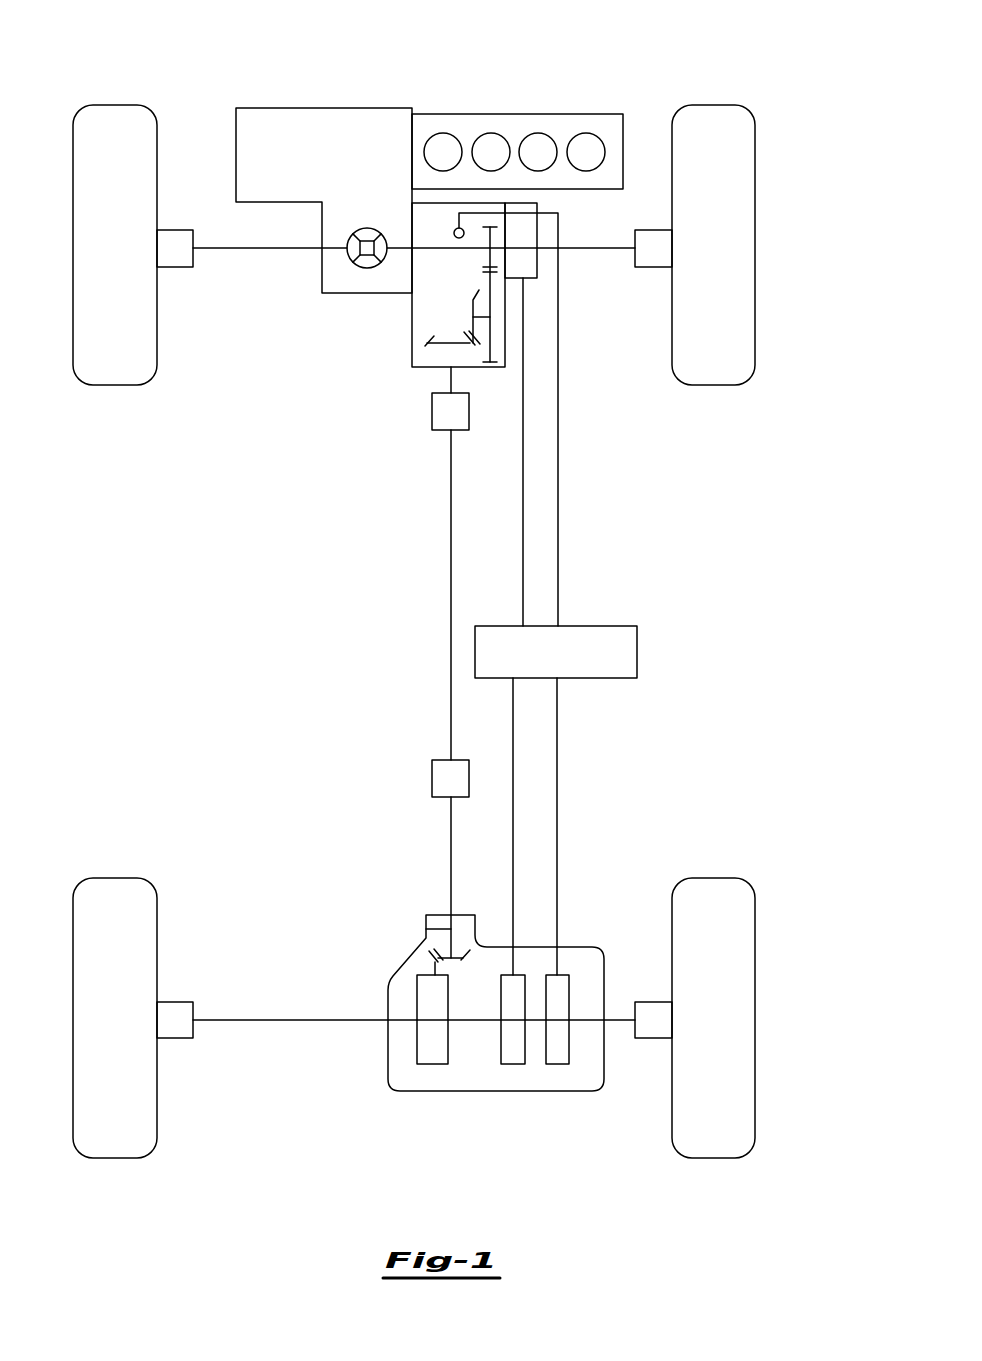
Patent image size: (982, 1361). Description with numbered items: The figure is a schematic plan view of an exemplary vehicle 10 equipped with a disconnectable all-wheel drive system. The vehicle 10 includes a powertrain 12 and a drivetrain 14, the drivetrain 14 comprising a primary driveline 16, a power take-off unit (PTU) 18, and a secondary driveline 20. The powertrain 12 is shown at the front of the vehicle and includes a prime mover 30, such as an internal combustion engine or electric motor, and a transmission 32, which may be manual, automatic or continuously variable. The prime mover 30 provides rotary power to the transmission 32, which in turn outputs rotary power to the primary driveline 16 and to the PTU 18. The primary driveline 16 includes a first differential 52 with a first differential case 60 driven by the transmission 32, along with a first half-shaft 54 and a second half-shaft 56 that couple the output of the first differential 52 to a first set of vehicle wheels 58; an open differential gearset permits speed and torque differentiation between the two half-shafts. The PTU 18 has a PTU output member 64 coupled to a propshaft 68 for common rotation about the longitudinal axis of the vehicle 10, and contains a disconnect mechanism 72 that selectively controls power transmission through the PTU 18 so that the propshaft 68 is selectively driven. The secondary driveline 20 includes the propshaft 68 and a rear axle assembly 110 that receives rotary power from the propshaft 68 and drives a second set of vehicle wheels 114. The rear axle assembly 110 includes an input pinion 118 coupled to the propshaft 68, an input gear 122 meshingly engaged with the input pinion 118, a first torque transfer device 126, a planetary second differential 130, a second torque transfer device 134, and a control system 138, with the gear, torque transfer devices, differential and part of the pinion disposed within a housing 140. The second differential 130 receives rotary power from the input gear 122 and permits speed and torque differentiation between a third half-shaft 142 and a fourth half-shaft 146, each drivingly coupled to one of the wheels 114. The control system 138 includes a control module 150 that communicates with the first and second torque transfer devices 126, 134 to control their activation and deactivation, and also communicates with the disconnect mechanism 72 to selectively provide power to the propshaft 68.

The vehicle 10 is at (771, 597).
The powertrain 12 is at (518, 82).
The drivetrain 14 is at (383, 591).
The primary driveline 16 is at (292, 298).
The power take-off unit 18 is at (346, 362).
The secondary driveline 20 is at (352, 1105).
The prime mover 30 is at (450, 113).
The transmission 32 is at (278, 108).
The first differential 52 is at (362, 286).
The first half-shaft 54 is at (212, 250).
The second half-shaft 56 is at (616, 248).
The first set of vehicle wheels 58 is at (113, 385).
The first differential case 60 is at (370, 227).
The PTU output member 64 is at (451, 383).
The propshaft 68 is at (451, 480).
The disconnect mechanism 72 is at (537, 272).
The rear axle assembly 110 is at (374, 993).
The second set of vehicle wheels 114 is at (112, 878).
The input pinion 118 is at (428, 929).
The input gear 122 is at (437, 1065).
The first torque transfer device 126 is at (512, 1079).
The second differential 130 is at (417, 1043).
The second torque transfer device 134 is at (556, 1079).
The control system 138 is at (612, 709).
The housing 140 is at (580, 947).
The third half-shaft 142 is at (218, 1018).
The fourth half-shaft 146 is at (618, 1015).
The control module 150 is at (609, 626).